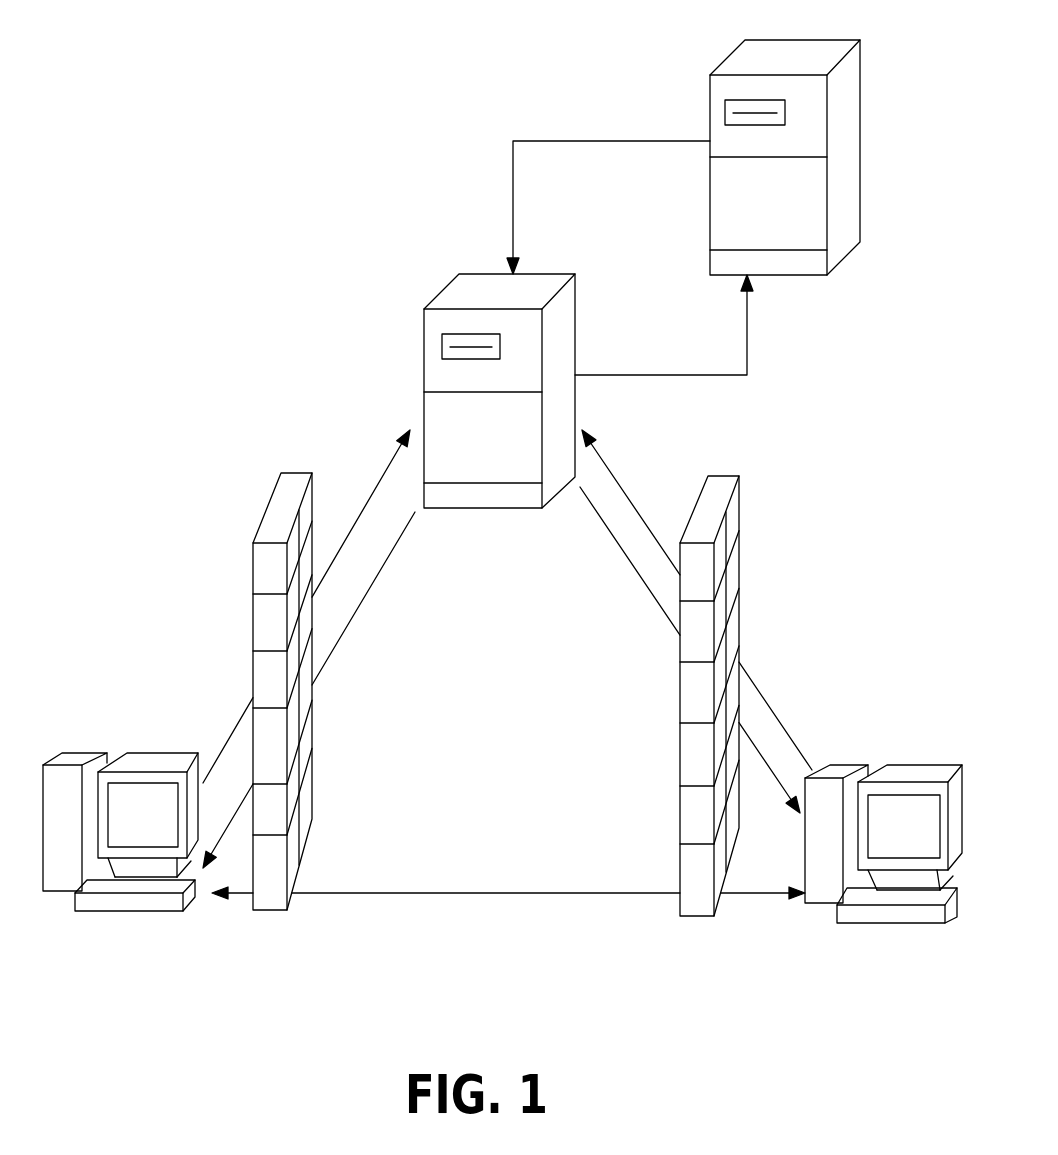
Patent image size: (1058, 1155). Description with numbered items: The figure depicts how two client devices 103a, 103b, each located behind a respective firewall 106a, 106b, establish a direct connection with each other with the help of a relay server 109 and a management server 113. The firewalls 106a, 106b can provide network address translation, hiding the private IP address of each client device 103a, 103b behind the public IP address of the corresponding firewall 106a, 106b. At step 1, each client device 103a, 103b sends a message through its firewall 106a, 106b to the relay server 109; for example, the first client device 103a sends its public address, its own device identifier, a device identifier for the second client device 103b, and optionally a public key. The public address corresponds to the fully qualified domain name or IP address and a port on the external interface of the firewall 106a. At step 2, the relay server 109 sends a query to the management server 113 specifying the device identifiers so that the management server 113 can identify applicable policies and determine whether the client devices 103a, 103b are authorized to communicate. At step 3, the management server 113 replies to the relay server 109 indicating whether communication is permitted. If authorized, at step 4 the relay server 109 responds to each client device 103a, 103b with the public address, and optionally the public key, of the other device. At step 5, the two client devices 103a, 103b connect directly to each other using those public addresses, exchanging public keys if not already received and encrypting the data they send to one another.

The first client device 103a is at (145, 716).
The second client device 103b is at (913, 733).
The firewall 106a is at (340, 712).
The firewall 106b is at (640, 762).
The relay server 109 is at (401, 289).
The management server 113 is at (690, 73).
The step 1 is at (507, 606).
The step 2 is at (664, 325).
The step 3 is at (608, 185).
The step 4 is at (501, 677).
The step 5 is at (508, 872).